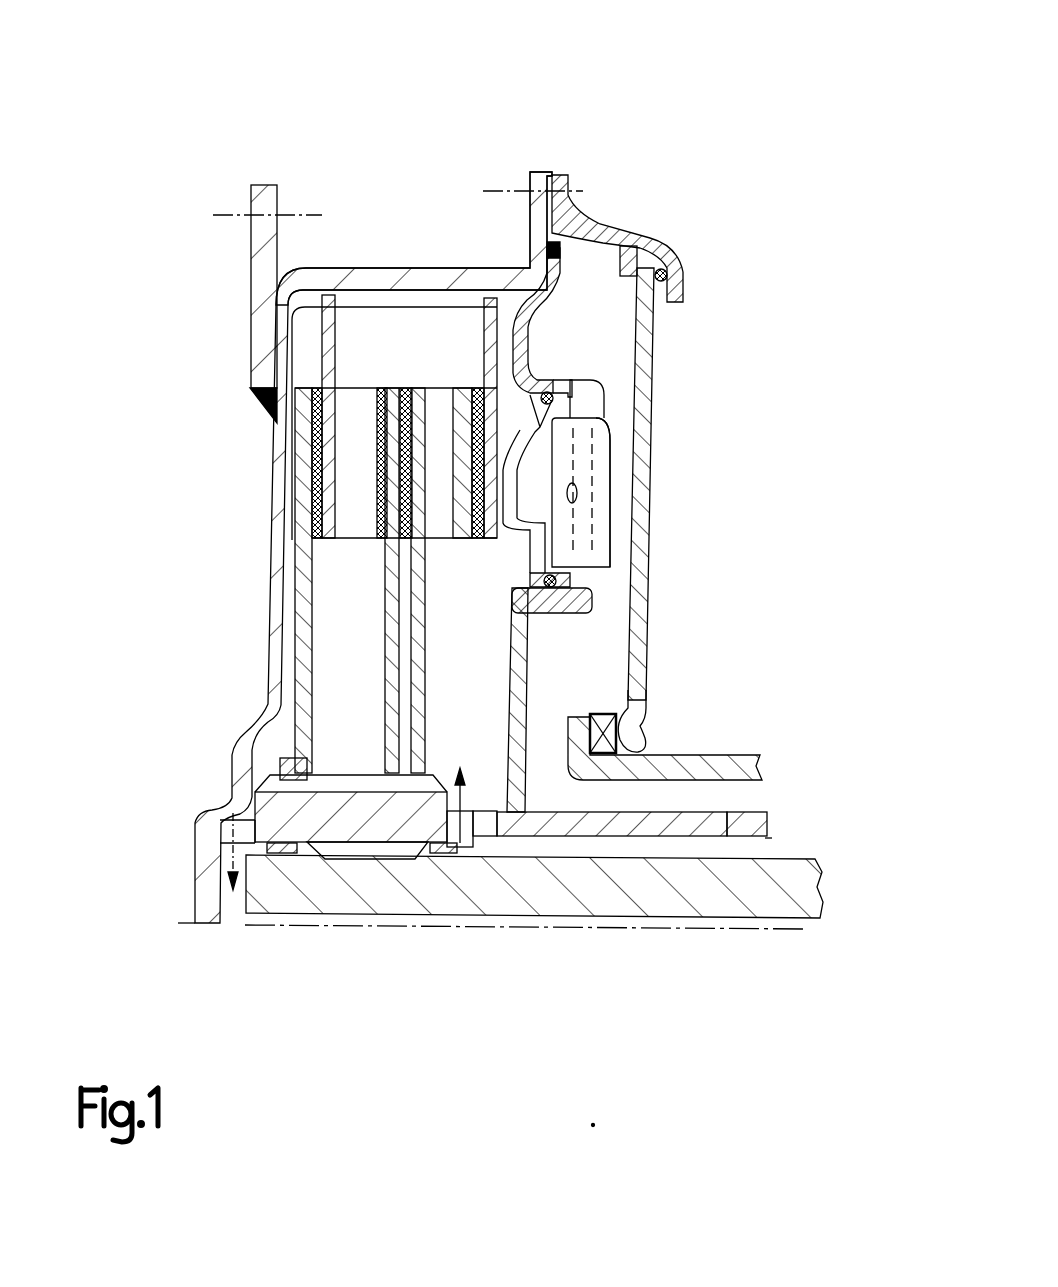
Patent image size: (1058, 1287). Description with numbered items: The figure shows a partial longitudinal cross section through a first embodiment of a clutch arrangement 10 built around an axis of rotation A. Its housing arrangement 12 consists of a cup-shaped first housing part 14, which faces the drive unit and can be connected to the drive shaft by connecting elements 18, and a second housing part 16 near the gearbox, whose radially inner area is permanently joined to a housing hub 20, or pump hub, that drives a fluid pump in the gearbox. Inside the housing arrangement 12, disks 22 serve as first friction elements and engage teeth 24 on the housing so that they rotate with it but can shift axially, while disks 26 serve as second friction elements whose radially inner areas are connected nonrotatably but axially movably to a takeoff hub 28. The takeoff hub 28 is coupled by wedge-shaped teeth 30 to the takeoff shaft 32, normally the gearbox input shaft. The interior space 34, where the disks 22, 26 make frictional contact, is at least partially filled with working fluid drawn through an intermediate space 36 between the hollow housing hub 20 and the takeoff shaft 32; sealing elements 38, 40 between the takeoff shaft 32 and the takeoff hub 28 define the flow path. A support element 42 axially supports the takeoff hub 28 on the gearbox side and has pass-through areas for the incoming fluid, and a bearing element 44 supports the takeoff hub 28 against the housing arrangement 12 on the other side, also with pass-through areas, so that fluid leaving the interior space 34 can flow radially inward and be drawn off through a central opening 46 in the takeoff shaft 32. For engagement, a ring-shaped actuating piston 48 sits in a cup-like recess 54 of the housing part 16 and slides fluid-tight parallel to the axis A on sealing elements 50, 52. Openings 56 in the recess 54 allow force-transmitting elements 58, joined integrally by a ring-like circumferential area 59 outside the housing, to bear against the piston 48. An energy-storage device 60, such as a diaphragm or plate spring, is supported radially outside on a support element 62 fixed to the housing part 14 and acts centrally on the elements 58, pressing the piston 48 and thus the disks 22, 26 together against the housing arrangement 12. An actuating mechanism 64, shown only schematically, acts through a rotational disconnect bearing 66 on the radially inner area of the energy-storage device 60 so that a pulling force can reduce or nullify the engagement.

The clutch arrangement 10 is at (670, 138).
The housing arrangement 12 is at (398, 300).
The first housing part 14 is at (272, 494).
The second housing part 16 is at (535, 660).
The connecting elements 18 is at (258, 281).
The housing hub 20 is at (632, 824).
The disks 22 is at (348, 268).
The teeth 24 is at (453, 303).
The disks 26 is at (302, 580).
The takeoff hub 28 is at (358, 858).
The wedge-shaped teeth 30 is at (367, 860).
The takeoff shaft 32 is at (603, 883).
The interior space 34 is at (362, 349).
The intermediate space 36 is at (733, 850).
The sealing element 38 is at (450, 863).
The sealing element 40 is at (287, 853).
The support element 42 is at (483, 860).
The bearing element 44 is at (222, 821).
The central opening 46 is at (688, 923).
The actuating piston 48 is at (653, 420).
The sealing element 50 is at (545, 392).
The sealing element 52 is at (587, 612).
The cup-like recess 54 is at (592, 500).
The openings 56 is at (585, 392).
The force-transmitting element 58 is at (612, 450).
The ring-like circumferential area 59 is at (605, 537).
The energy-storage device 60 is at (633, 690).
The support element 62 is at (627, 230).
The actuating mechanism 64 is at (757, 755).
The rotational disconnect bearing 66 is at (605, 716).
The axis of rotation A is at (185, 924).